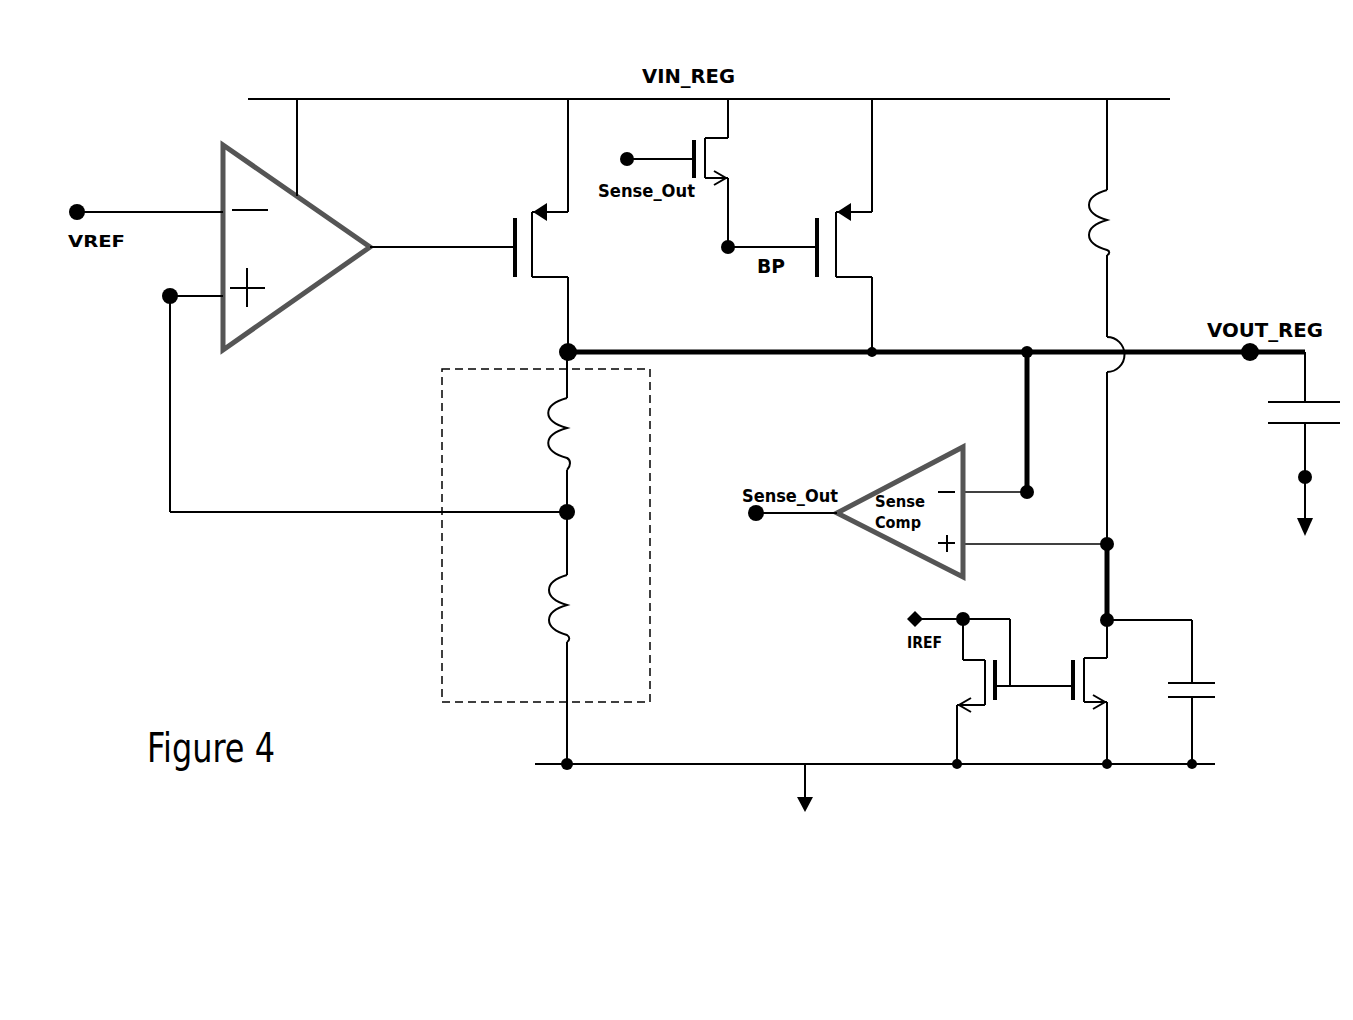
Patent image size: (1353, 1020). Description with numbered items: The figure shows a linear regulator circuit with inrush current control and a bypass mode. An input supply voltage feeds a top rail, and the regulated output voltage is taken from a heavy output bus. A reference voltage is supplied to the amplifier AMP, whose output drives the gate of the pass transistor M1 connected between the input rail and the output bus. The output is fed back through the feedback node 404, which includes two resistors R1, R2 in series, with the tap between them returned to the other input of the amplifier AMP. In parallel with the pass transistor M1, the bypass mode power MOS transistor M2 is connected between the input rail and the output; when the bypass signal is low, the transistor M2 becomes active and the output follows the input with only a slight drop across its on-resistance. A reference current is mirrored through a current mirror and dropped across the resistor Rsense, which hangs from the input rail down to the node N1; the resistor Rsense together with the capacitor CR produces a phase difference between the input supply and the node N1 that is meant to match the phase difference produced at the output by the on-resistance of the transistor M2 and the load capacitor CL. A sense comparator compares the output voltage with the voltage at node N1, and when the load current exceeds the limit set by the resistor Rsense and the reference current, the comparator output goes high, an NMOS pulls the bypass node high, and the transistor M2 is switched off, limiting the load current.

The feedback node 404 is at (496, 561).
The amplifier AMP is at (296, 224).
The pass transistor M1 is at (550, 225).
The bypass mode power MOS transistor M2 is at (853, 228).
The sense resistor Rsense is at (1142, 321).
The load capacitor CL is at (1298, 444).
The node N1 is at (1122, 676).
The capacitor CR is at (1191, 694).
The resistor R1 is at (586, 432).
The resistor R2 is at (587, 641).